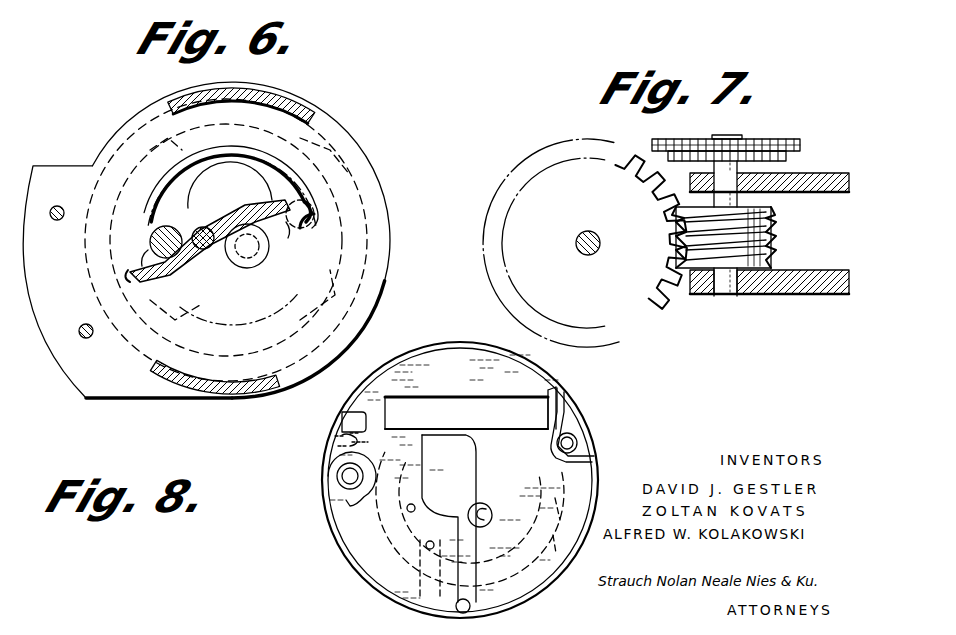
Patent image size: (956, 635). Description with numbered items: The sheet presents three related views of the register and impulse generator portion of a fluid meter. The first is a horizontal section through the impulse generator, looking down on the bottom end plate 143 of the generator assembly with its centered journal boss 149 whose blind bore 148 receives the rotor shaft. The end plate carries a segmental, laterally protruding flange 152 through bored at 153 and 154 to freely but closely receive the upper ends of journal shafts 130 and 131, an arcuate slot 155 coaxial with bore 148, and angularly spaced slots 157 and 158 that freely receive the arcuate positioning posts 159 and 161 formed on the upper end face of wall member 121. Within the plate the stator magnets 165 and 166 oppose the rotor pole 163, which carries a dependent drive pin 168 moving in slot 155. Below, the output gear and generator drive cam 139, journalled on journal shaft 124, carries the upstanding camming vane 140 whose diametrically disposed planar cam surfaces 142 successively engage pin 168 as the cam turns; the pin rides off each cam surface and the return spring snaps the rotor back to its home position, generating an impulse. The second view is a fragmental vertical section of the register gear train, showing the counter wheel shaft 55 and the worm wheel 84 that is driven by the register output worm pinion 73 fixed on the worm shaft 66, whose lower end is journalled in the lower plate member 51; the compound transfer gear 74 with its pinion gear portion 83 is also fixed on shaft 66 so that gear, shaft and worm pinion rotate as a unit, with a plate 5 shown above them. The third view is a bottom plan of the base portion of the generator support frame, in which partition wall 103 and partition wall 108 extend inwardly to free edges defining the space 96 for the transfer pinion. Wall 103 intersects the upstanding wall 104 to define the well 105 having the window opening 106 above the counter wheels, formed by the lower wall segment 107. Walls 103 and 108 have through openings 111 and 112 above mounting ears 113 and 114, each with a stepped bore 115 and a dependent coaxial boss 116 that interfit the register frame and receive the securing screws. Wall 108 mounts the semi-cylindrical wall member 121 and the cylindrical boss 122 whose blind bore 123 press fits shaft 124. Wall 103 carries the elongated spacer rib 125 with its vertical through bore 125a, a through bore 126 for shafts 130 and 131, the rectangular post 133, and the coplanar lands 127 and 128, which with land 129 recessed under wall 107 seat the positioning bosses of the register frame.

In FIG. 6, the flange 152 is at (44, 170).
In FIG. 6, the through bore 154 is at (60, 206).
In FIG. 6, the journal shaft 131 is at (63, 220).
In FIG. 6, the journal shaft 130 is at (80, 326).
In FIG. 6, the through bore 153 is at (91, 338).
In FIG. 6, the stator magnet 165 is at (168, 150).
In FIG. 6, the stator magnet 166 is at (362, 167).
In FIG. 6, the arcuate positioning post 161 is at (246, 90).
In FIG. 6, the slot 158 is at (290, 96).
In FIG. 6, the bottom end plate 143 is at (335, 115).
In FIG. 6, the arcuate slot 155 is at (222, 156).
In FIG. 6, the pole 163 is at (250, 158).
In FIG. 6, the camming vane 140 is at (254, 200).
In FIG. 6, the drive pin 168 is at (306, 220).
In FIG. 6, the cam surface 142 is at (142, 262).
In FIG. 6, the blind bore 148 is at (270, 250).
In FIG. 6, the journal boss 149 is at (253, 262).
In FIG. 6, the journal shaft 124 is at (212, 260).
In FIG. 6, the output gear and generator drive cam 139 is at (182, 280).
In FIG. 6, the slot 157 is at (200, 380).
In FIG. 6, the arcuate positioning post 159 is at (205, 398).
In FIG. 7, the shaft 55 is at (586, 233).
In FIG. 7, the worm wheel 84 is at (636, 314).
In FIG. 7, the compound transfer gear 74 is at (808, 148).
In FIG. 7, the pinion gear portion 83 is at (789, 157).
In FIG. 7, the top plate 5 is at (845, 178).
In FIG. 7, the register output worm pinion 73 is at (785, 227).
In FIG. 7, the worm shaft 66 is at (728, 290).
In FIG. 7, the lower plate member 51 is at (803, 291).
In FIG. 8, the partition wall 103 is at (372, 566).
In FIG. 8, the well 105 is at (510, 358).
In FIG. 8, the window opening 106 is at (425, 398).
In FIG. 8, the wall segment 107 is at (471, 380).
In FIG. 8, the wall 104 is at (466, 413).
In FIG. 8, the land 129 is at (565, 400).
In FIG. 8, the land 127 is at (341, 420).
In FIG. 8, the post 133 is at (335, 437).
In FIG. 8, the dependent coaxial boss 116 is at (340, 470).
In FIG. 8, the stepped bore 115 is at (338, 480).
In FIG. 8, the mounting ear 113 is at (372, 470).
In FIG. 8, the through opening 111 is at (350, 504).
In FIG. 8, the mounting ear 114 is at (566, 425).
In FIG. 8, the through opening 112 is at (578, 462).
In FIG. 8, the space 96 is at (420, 440).
In FIG. 8, the partition wall 108 is at (546, 536).
In FIG. 8, the boss 122 is at (485, 508).
In FIG. 8, the blind bore 123 is at (494, 516).
In FIG. 8, the through bore 126 is at (409, 510).
In FIG. 8, the spacer rib 125 is at (418, 574).
In FIG. 8, the through bore 125a is at (426, 546).
In FIG. 8, the land 128 is at (470, 598).
In FIG. 8, the semi-cylindrical wall member 121 is at (552, 585).